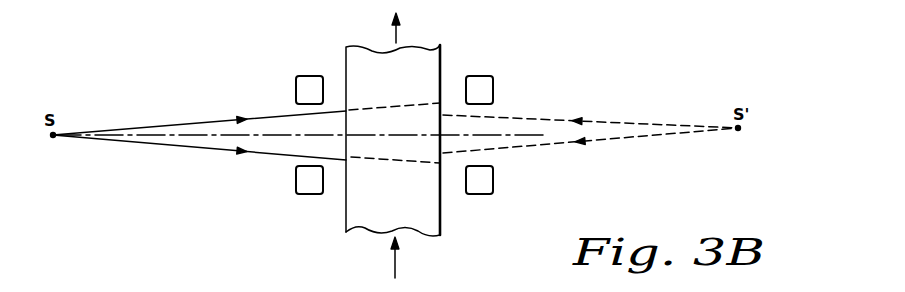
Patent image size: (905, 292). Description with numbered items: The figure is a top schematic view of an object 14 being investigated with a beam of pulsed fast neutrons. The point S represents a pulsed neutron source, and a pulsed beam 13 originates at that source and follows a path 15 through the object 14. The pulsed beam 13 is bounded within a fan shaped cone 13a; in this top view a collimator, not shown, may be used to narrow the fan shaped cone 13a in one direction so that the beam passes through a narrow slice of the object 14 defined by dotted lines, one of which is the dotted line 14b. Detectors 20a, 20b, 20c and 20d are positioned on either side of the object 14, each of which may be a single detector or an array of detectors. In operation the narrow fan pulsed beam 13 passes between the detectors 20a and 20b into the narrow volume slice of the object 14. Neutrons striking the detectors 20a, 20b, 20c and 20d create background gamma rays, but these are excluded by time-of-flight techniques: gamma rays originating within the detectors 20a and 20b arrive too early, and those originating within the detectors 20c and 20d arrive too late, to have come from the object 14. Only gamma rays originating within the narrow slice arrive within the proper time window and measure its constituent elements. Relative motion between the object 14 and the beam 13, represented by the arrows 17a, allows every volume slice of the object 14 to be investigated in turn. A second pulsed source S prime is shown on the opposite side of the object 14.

The pulsed beam 13 is at (194, 128).
The fan shaped cone 13a is at (260, 116).
The object 14 is at (359, 58).
The dotted line 14b is at (402, 82).
The path 15 is at (295, 137).
The arrows 17a is at (398, 36).
The detector 20a is at (301, 75).
The detector 20b is at (298, 195).
The detector 20c is at (480, 75).
The detector 20d is at (480, 195).